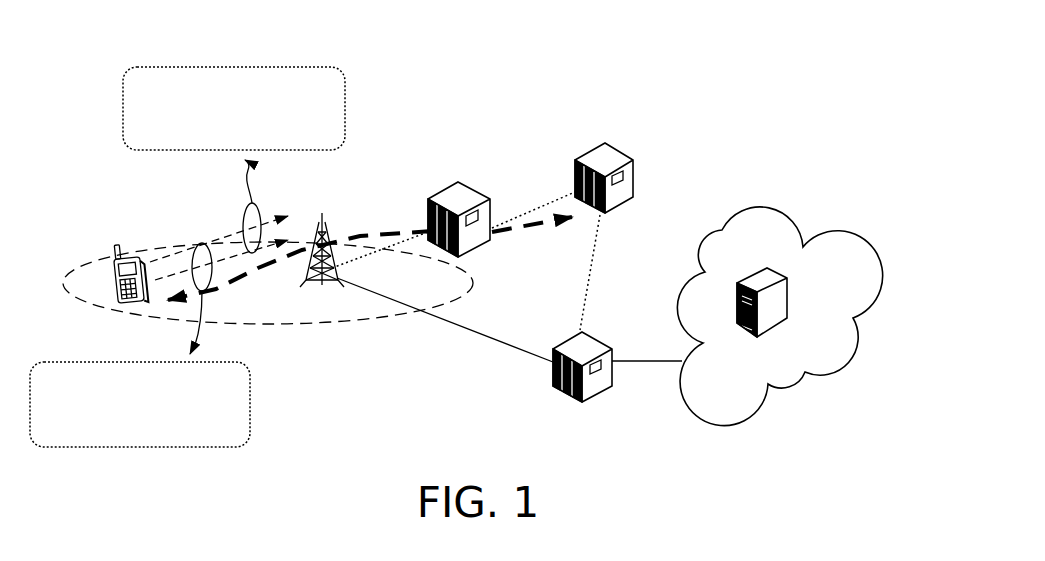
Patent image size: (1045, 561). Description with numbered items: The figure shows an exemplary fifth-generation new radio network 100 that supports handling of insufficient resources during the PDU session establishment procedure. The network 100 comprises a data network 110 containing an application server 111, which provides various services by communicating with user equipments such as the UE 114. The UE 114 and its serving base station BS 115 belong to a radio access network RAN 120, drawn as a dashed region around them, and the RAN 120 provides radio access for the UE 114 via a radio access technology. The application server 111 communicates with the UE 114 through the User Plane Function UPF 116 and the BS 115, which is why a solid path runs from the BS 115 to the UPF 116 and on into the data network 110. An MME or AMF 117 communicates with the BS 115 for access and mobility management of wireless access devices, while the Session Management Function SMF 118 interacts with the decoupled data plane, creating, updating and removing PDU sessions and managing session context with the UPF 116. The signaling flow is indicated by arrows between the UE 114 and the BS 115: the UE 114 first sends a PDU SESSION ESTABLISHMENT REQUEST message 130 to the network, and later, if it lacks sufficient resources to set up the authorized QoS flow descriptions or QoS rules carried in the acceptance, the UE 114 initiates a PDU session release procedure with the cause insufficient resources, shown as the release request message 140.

The 5G new radio (NR) network 100 is at (855, 0).
The data network 110 is at (846, 349).
The application server 111 is at (760, 268).
The user equipment (UE) 114 is at (122, 250).
The base station (BS) 115 is at (322, 213).
The User Plane Function (UPF) 116 is at (592, 335).
The mobility management entity (MME) or access and mobility management function (AMF 117 is at (480, 136).
The Session Management Function (SMF) 118 is at (617, 153).
The radio access network (RAN) 120 is at (311, 312).
The PDU SESSION ESTABLISHMENT REQUEST message 130 is at (100, 448).
The PDU session release request with cause insufficient resources 140 is at (231, 67).